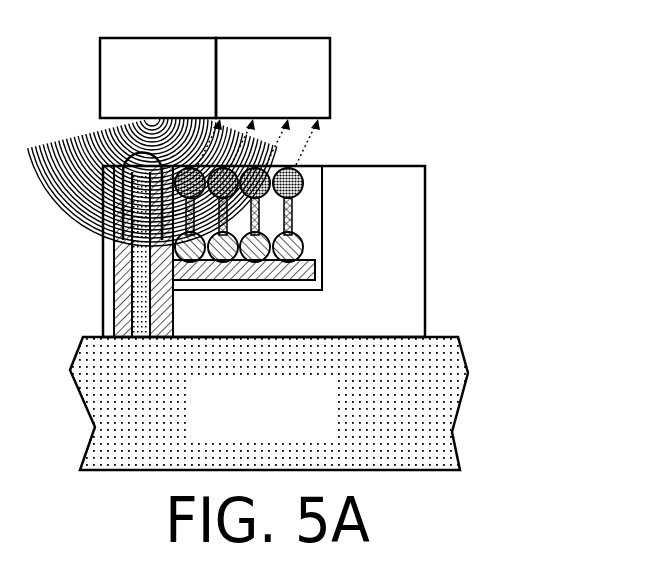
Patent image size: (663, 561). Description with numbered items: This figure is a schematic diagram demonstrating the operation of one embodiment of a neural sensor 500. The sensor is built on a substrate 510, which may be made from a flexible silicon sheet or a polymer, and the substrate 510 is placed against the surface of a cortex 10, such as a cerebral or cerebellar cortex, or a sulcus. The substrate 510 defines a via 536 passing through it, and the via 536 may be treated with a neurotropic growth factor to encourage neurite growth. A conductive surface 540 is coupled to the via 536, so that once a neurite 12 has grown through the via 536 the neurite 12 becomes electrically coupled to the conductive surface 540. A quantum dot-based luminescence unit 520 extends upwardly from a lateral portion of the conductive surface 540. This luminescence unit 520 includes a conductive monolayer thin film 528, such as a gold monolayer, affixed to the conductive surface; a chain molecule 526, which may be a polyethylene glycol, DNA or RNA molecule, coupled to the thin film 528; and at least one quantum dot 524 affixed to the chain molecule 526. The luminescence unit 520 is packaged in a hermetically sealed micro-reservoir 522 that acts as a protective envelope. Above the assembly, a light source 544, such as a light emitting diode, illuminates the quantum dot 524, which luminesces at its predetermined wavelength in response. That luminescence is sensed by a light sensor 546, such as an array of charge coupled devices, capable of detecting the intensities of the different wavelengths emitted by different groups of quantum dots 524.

The neural sensor 500 is at (505, 53).
The substrate 510 is at (433, 157).
The hermetically sealed micro-reservoir 522 is at (322, 183).
The quantum dot-based luminescence unit 520 is at (318, 252).
The quantum dot 524 is at (300, 189).
The chain molecule 526 is at (296, 224).
The conductive monolayer thin film 528 is at (305, 238).
The neurite 12 is at (137, 268).
The via 536 is at (121, 296).
The conductive surface 540 is at (121, 303).
The light source 544 is at (168, 37).
The light sensor 546 is at (297, 37).
The cortex 10 is at (70, 370).